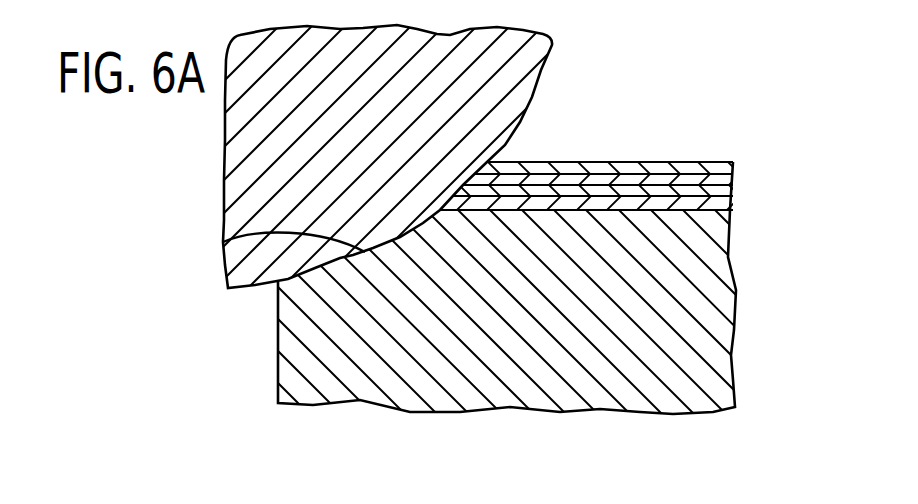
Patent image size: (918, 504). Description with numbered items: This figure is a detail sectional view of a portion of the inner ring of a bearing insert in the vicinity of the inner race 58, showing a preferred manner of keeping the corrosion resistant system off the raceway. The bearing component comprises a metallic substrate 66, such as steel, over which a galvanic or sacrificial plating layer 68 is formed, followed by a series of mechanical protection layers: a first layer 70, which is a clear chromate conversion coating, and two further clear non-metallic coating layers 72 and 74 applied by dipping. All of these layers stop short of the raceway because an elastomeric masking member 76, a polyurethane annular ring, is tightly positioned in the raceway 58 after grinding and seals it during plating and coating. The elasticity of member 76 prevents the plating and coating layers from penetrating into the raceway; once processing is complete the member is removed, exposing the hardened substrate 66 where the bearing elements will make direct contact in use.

The inner race 58 is at (222, 239).
The metallic substrate 66 is at (717, 330).
The plating layer 68 is at (737, 207).
The first layer 70 is at (733, 192).
The coating layer 72 is at (728, 182).
The coating layer 74 is at (720, 168).
The elastomeric masking member 76 is at (523, 63).